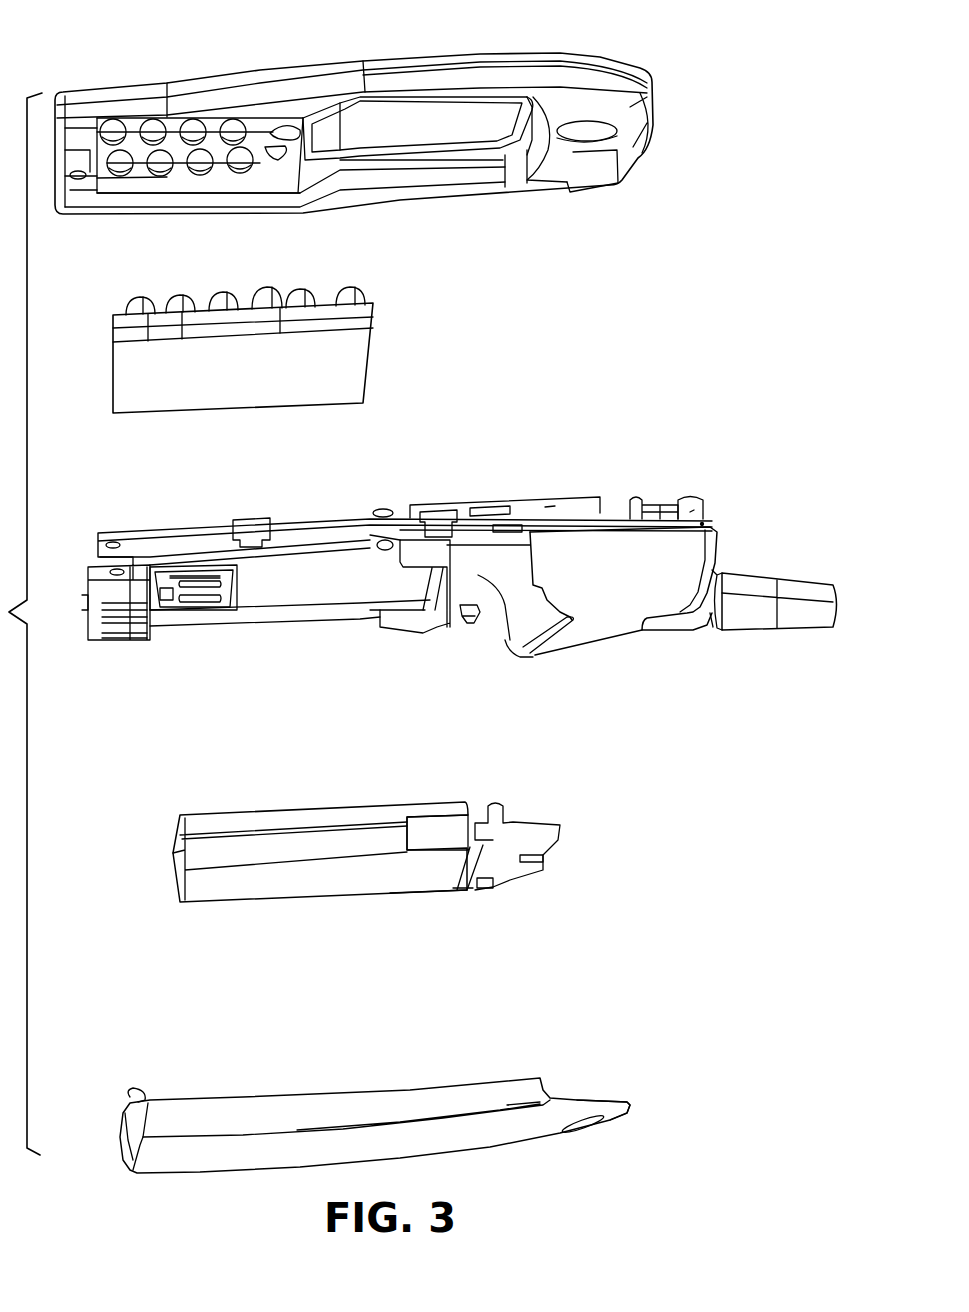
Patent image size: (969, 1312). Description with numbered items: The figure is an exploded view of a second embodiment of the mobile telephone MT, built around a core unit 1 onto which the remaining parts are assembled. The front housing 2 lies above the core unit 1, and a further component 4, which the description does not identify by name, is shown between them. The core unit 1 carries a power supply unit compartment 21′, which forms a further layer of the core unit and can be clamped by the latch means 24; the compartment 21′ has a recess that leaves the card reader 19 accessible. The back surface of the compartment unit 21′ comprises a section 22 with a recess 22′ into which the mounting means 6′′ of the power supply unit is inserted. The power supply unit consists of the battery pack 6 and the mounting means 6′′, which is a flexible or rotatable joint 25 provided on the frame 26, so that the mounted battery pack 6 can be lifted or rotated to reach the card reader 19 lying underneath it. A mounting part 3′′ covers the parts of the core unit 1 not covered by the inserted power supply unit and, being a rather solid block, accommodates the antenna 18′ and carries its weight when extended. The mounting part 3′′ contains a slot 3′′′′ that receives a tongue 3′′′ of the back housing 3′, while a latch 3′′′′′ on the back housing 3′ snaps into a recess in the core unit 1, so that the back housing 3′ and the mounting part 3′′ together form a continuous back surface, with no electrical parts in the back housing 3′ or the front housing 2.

The core unit 1 is at (545, 486).
The front housing 2 is at (349, 47).
The back housing 3′ is at (438, 1140).
The mounting part 3′′ is at (605, 617).
The tongue 3′′′ is at (630, 1102).
The slot 3′′′′ is at (532, 653).
The latch 3′′′′′ is at (135, 1092).
The keypad block 4 is at (388, 320).
The battery pack 6 is at (271, 912).
The mounting means 6′′ is at (507, 867).
The antenna 18′ is at (797, 617).
The card reader 19 is at (197, 590).
The power supply unit compartment 21′ is at (258, 603).
The section 22 is at (478, 577).
The recess 22′ is at (467, 623).
The latch means 24 is at (250, 520).
The joint 25 is at (472, 890).
The frame 26 is at (430, 557).
The mobile telephone MT is at (683, 365).